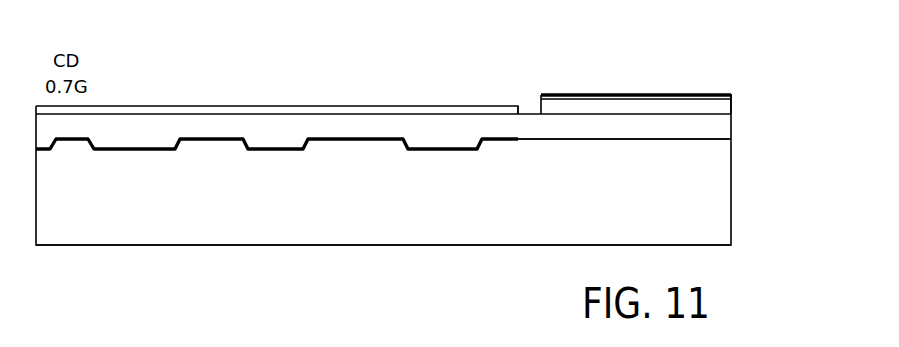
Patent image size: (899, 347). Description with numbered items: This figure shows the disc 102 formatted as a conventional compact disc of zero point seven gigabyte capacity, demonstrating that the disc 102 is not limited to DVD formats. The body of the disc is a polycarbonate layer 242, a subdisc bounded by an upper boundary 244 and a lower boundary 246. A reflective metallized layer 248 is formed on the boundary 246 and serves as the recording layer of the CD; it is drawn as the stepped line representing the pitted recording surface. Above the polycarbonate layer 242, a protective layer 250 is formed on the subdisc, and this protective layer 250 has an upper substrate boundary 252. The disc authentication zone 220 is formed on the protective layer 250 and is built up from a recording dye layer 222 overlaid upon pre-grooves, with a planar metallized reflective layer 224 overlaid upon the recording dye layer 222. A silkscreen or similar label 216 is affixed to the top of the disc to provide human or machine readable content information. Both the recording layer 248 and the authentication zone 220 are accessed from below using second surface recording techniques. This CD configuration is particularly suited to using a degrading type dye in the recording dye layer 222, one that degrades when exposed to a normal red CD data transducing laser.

The disc 102 is at (160, 26).
The label 216 is at (296, 106).
The disc authentication zone 220 is at (679, 57).
The recording dye layer 222 is at (590, 103).
The planar metallized reflective layer 224 is at (637, 95).
The polycarbonate layer 242 is at (690, 195).
The boundary 244 is at (577, 139).
The boundary 246 is at (472, 245).
The reflective metallized layer 248 is at (333, 143).
The protective layer 250 is at (705, 125).
The upper substrate boundary 252 is at (533, 111).